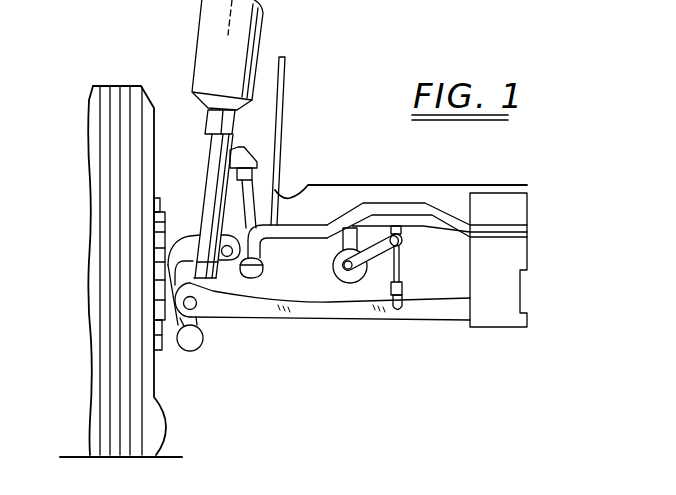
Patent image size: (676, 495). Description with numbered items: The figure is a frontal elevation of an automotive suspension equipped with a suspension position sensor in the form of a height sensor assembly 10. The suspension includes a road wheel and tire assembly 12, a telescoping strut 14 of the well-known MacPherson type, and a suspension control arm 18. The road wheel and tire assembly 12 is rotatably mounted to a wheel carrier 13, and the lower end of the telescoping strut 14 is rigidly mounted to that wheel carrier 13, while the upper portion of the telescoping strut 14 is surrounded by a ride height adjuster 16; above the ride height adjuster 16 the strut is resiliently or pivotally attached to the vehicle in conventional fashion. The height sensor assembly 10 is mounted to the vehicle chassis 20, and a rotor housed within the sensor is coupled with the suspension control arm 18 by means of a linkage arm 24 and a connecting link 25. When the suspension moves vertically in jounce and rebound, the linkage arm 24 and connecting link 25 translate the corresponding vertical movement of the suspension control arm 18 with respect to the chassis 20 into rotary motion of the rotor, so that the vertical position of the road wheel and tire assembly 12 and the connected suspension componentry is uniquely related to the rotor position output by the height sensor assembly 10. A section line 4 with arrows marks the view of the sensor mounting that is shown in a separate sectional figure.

The section line 4 is at (327, 300).
The height sensor assembly 10 is at (373, 292).
The road wheel and tire assembly 12 is at (103, 241).
The wheel carrier 13 is at (170, 277).
The telescoping strut 14 is at (212, 150).
The ride height adjuster 16 is at (263, 38).
The suspension control arm 18 is at (292, 321).
The vehicle chassis 20 is at (465, 190).
The linkage arm 24 is at (381, 262).
The connecting link 25 is at (403, 268).